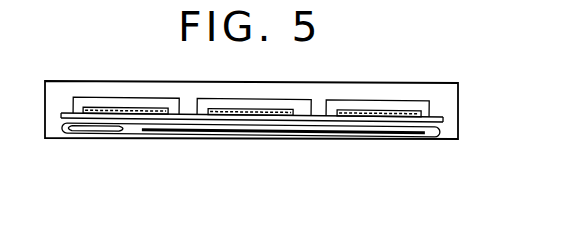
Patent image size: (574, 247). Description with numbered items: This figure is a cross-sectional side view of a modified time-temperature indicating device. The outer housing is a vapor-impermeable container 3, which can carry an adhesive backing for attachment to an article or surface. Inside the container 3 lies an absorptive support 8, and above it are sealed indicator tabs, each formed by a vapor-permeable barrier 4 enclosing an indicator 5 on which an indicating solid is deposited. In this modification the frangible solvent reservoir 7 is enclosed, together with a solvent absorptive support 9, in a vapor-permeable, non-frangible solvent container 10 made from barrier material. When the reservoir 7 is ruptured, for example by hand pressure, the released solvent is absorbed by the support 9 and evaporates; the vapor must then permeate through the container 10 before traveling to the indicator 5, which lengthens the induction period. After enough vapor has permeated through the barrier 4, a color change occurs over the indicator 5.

The vapor-impermeable container 3 is at (409, 140).
The barrier 4 is at (413, 100).
The indicator 5 is at (385, 110).
The solvent reservoir 7 is at (85, 133).
The absorptive support 8 is at (443, 119).
The solvent absorptive support 9 is at (316, 131).
The solvent container 10 is at (440, 132).